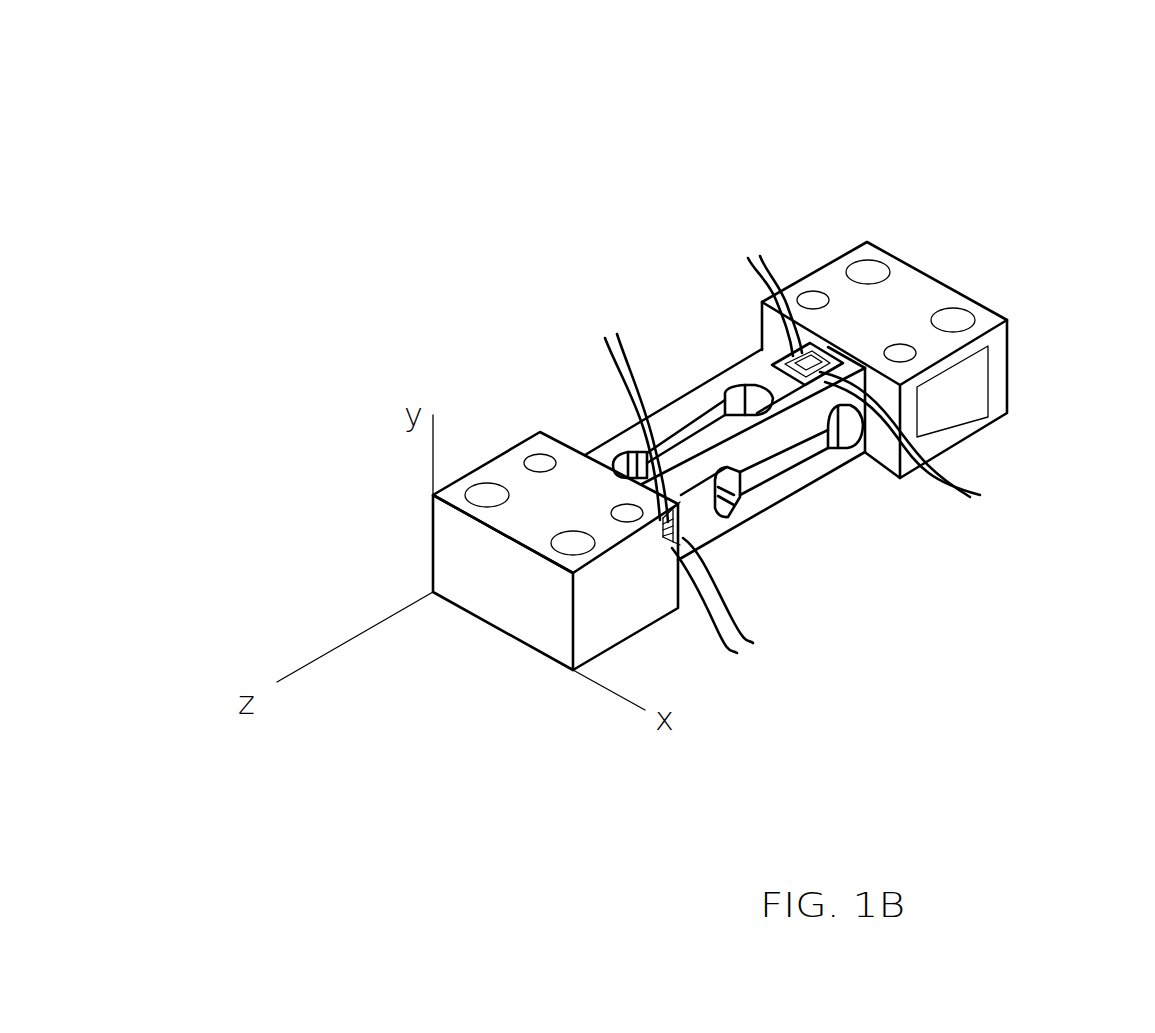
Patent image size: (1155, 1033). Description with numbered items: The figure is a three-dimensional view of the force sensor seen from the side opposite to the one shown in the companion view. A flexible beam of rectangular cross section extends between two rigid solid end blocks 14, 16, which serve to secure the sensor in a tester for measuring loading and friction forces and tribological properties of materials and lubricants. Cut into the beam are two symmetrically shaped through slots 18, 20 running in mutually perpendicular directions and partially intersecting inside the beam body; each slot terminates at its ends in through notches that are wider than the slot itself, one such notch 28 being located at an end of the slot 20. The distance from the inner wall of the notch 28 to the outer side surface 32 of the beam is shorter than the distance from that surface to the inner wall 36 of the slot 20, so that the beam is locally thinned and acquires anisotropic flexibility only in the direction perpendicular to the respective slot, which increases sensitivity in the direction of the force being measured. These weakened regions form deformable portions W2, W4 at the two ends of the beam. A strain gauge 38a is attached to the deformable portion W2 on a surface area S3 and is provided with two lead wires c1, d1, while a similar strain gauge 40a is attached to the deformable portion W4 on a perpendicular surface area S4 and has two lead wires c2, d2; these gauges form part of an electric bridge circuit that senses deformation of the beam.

The rigid solid end block 14 is at (473, 434).
The rigid solid end block 16 is at (872, 208).
The through slot 18 is at (860, 420).
The through slot 20 is at (808, 483).
The through notch 28 is at (750, 540).
The outer side surface 32 is at (871, 472).
The inner wall 36 is at (787, 487).
The strain gauge 38a is at (801, 307).
The strain gauge 40a is at (683, 580).
The surface area S3 is at (792, 439).
The surface area S4 is at (771, 537).
The deformable portion W2 is at (864, 343).
The deformable portion W4 is at (724, 567).
The lead wire c1 is at (765, 290).
The lead wire c2 is at (627, 411).
The lead wire d1 is at (926, 443).
The lead wire d2 is at (719, 613).